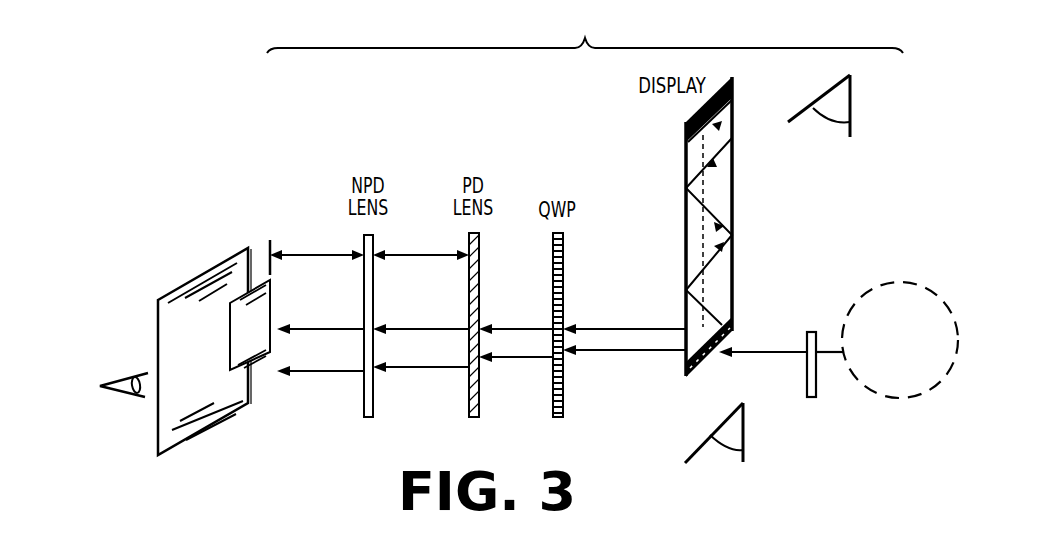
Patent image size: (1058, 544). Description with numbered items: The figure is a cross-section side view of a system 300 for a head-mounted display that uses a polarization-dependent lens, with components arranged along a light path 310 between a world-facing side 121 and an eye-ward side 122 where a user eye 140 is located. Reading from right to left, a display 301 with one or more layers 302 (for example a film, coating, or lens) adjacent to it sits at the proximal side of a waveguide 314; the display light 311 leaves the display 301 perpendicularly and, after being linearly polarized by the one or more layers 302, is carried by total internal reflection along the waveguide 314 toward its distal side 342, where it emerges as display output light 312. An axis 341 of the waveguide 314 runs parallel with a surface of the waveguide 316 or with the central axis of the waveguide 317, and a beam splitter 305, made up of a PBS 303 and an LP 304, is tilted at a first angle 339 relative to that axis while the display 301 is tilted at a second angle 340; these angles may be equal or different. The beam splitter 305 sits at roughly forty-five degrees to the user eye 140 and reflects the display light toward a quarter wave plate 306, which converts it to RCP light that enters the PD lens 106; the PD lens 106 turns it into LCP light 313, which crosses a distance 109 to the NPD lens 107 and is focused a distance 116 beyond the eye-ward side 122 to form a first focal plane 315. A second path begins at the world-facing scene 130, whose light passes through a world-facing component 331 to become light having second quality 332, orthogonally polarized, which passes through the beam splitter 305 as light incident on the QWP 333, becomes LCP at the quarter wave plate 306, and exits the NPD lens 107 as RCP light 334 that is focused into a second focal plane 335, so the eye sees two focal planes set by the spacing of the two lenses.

The light path 310 is at (585, 30).
The system 300 is at (510, 152).
The display 301 is at (697, 114).
The one or more layers 302 is at (736, 100).
The display light 311 is at (708, 167).
The waveguide 314 is at (685, 200).
The surface of the waveguide 316 is at (740, 212).
The central axis of the waveguide 317 is at (702, 252).
The display output light 312 is at (644, 328).
The beam splitter 305 is at (668, 362).
The PBS 303 is at (688, 368).
The LP 304 is at (703, 365).
The distal side of the waveguide 342 is at (742, 330).
The light having second quality 332 is at (768, 354).
The light incident on the QWP 333 is at (580, 355).
The world-facing component 331 is at (817, 380).
The world-facing scene 130 is at (886, 365).
The second angle 340 is at (813, 120).
The axis of the waveguide 341 is at (851, 127).
The world-facing side 121 is at (843, 214).
The first angle 339 is at (725, 452).
The quarter wave plate 306 is at (552, 247).
The PD lens 106 is at (468, 247).
The NPD lens 107 is at (363, 247).
The distance 109 is at (432, 258).
The distance 116 is at (328, 258).
The LCP light 313 is at (312, 333).
The RCP light 334 is at (322, 375).
The second focal plane 335 is at (210, 430).
The first focal plane 315 is at (230, 322).
The eye-ward side 122 is at (134, 358).
The user eye 140 is at (120, 397).